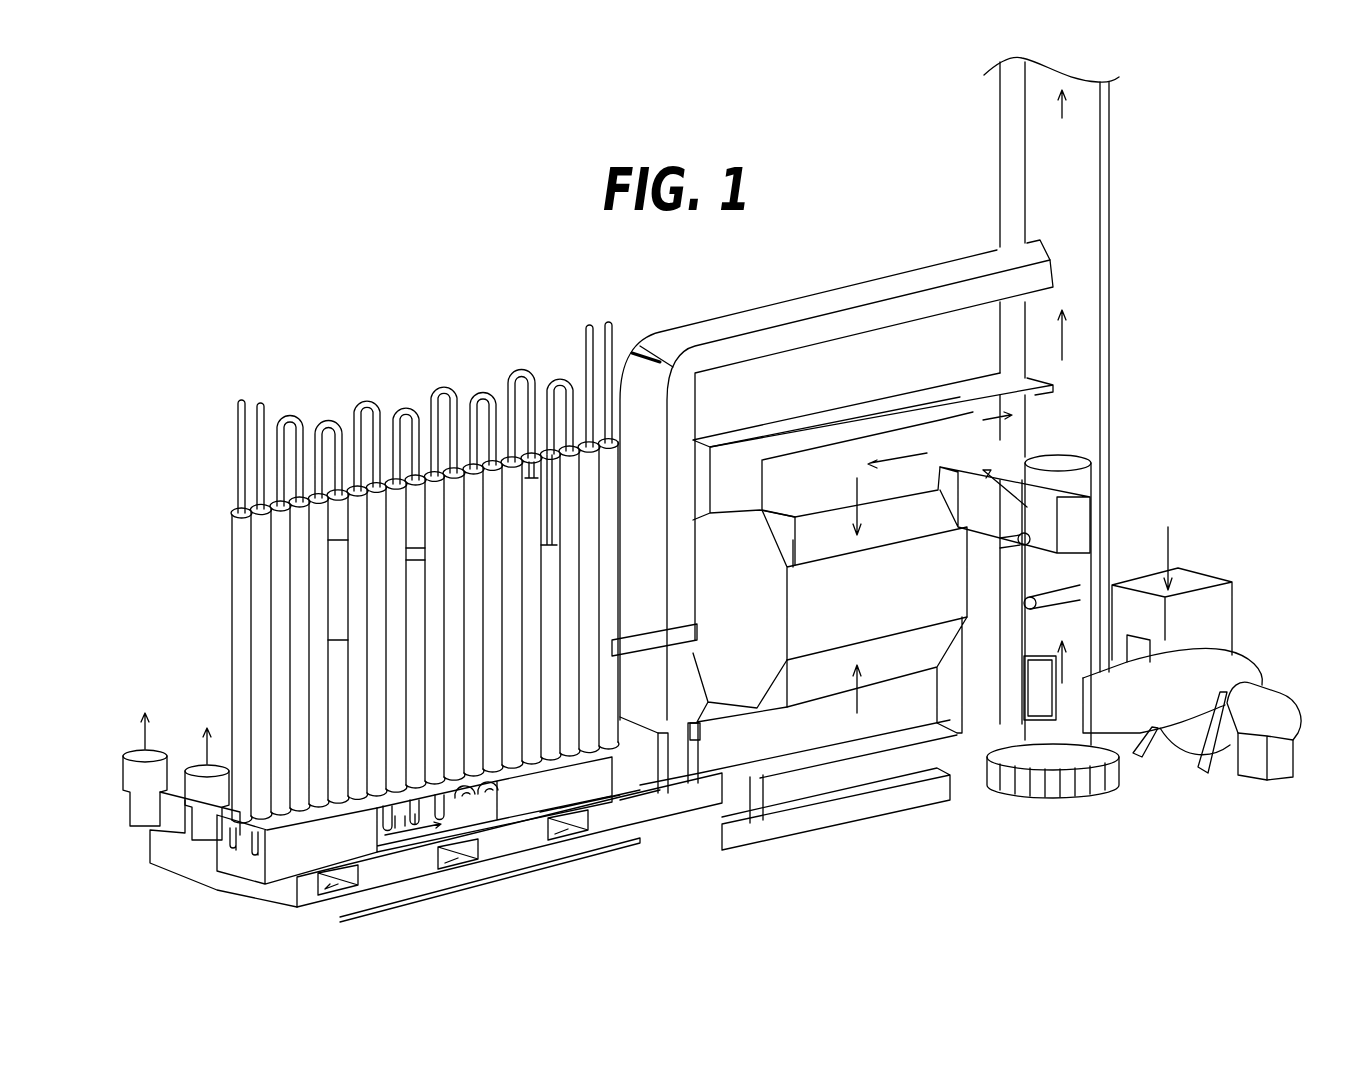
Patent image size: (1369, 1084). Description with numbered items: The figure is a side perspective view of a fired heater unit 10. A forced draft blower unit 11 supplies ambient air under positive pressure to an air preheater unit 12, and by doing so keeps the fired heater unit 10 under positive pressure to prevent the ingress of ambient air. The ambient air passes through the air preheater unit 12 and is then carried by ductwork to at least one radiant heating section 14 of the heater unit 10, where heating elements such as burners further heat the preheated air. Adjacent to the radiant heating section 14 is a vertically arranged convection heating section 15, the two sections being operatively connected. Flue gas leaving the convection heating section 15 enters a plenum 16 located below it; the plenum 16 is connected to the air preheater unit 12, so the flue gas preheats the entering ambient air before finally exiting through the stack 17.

The fired heater unit 10 is at (226, 519).
The forced draft blower unit 11 is at (1206, 535).
The air preheater unit 12 is at (862, 618).
The radiant heating section 14 is at (185, 858).
The convection heating section 15 is at (512, 375).
The plenum 16 is at (277, 853).
The stack 17 is at (1076, 151).